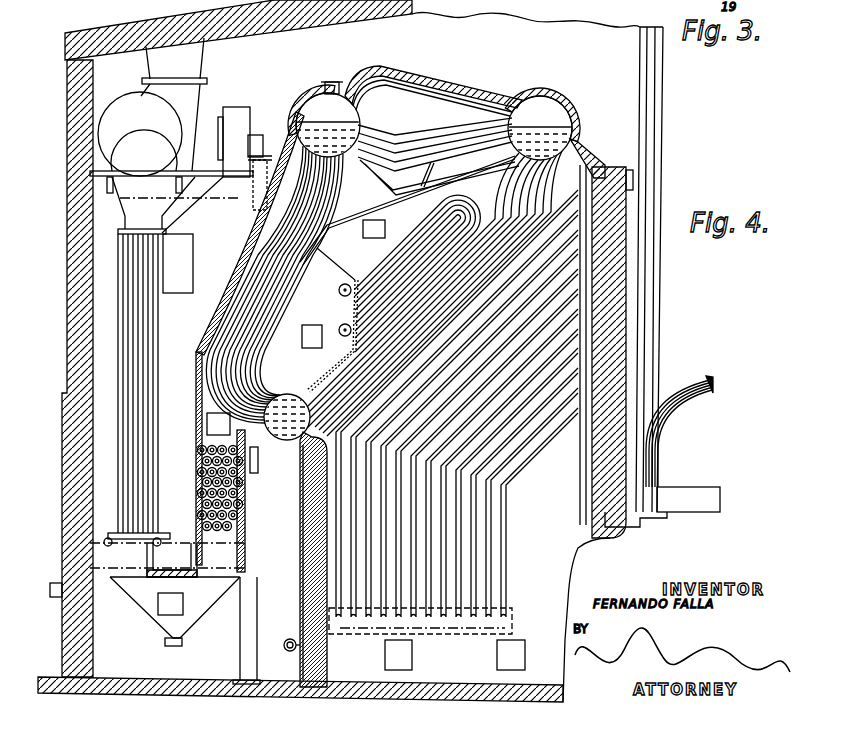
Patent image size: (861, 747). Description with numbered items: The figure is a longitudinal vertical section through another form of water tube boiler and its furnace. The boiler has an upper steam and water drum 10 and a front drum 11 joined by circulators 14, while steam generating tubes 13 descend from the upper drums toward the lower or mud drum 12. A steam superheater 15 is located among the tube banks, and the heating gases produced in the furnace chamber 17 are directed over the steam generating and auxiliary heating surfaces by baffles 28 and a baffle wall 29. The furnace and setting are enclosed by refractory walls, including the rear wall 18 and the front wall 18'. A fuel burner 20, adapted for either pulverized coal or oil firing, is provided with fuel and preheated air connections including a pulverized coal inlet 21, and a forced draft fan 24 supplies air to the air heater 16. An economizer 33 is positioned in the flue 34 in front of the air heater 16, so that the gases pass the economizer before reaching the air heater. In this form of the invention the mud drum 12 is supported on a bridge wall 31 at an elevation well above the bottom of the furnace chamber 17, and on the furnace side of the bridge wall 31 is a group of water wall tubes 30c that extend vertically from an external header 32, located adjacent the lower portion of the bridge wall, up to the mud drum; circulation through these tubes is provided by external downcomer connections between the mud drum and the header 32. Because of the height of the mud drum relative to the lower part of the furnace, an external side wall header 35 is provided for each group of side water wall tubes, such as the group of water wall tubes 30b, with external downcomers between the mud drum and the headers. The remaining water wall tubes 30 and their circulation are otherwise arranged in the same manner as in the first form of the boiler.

The upper steam and water drum 10 is at (306, 96).
The front drum 11 is at (550, 99).
The lower or mud drum 12 is at (286, 441).
The steam generating tubes 13 is at (355, 180).
The circulators 14 is at (433, 133).
The steam superheater 15 is at (360, 266).
The air heater 16 is at (118, 378).
The furnace chamber 17 is at (442, 384).
The rear wall 18 is at (639, 352).
The front wall 18' is at (64, 368).
The fuel burner 20 is at (590, 534).
The pulverized coal inlet 21 is at (673, 396).
The forced draft fan 24 is at (241, 106).
The baffles 28 is at (426, 178).
The baffle wall 29 is at (225, 300).
The water wall tubes 30 is at (582, 146).
The water wall tubes 30b is at (470, 510).
The water wall tubes 30c is at (300, 498).
The bridge wall 31 is at (300, 545).
The external header 32 is at (290, 639).
The economizer 33 is at (200, 448).
The flue 34 is at (222, 525).
The external side wall header 35 is at (447, 634).